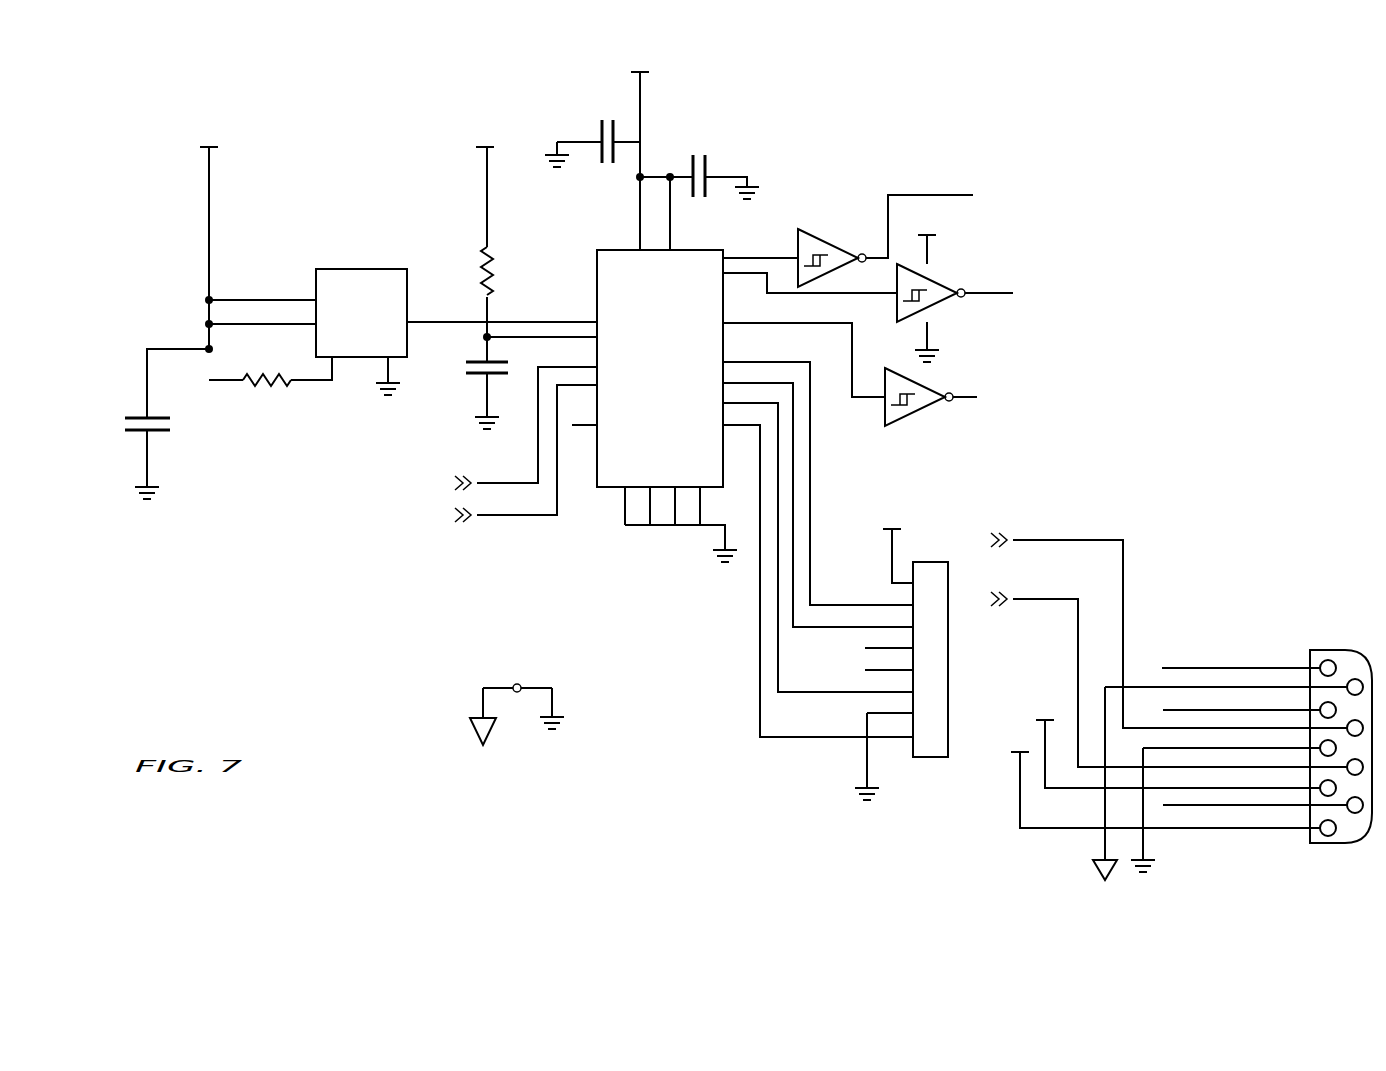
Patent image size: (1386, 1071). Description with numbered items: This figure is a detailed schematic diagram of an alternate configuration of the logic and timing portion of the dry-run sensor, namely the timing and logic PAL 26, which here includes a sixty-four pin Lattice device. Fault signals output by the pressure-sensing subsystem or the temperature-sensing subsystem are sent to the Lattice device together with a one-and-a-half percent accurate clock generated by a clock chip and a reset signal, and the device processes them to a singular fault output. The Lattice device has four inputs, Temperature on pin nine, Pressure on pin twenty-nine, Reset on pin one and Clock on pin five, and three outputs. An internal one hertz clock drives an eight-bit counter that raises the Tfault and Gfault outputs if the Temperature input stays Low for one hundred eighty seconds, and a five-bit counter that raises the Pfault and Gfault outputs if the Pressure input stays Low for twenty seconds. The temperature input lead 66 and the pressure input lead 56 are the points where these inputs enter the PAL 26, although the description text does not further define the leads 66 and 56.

The logic and timing programmable array logic (PAL) 26 is at (980, 121).
The temperature high input signal (THi) 66 is at (500, 483).
The pressure low input signal (PLo) 56 is at (512, 517).